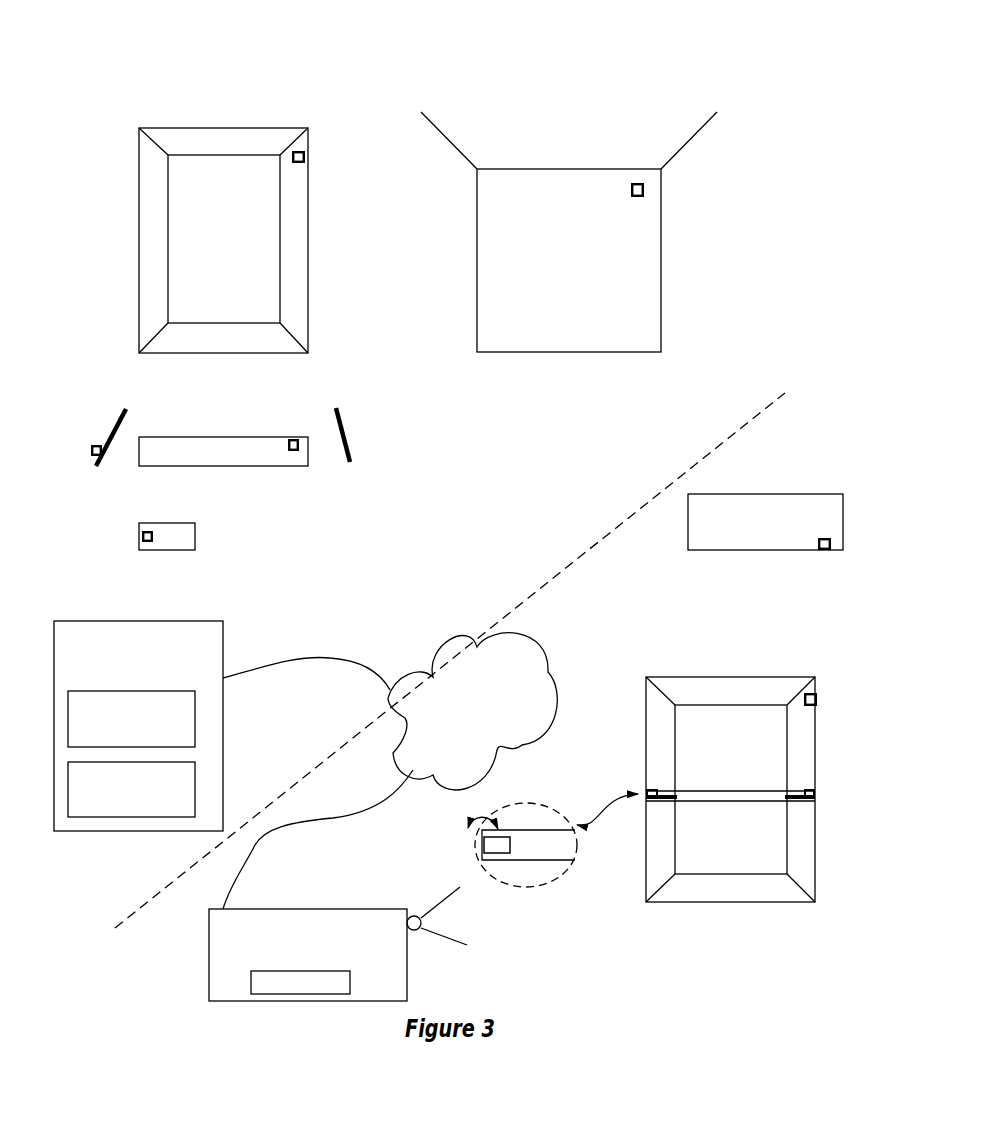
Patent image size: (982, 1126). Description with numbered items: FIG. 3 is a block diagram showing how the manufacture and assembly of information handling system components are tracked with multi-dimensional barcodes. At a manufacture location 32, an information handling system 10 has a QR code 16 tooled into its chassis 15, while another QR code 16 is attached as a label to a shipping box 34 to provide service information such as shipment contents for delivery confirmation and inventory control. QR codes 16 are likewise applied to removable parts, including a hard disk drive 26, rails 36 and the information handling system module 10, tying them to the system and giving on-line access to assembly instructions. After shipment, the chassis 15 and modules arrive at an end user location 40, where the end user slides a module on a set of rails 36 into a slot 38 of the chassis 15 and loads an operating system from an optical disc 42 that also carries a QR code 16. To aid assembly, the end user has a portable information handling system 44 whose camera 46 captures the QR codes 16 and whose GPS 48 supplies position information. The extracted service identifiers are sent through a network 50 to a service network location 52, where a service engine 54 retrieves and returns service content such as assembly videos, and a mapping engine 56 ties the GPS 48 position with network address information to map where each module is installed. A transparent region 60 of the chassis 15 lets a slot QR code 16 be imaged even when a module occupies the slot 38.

The information handling system 10 is at (308, 523).
The information handling system chassis 15 is at (138, 182).
The QR code 16 is at (631, 188).
The hard disk drive 26 is at (223, 568).
The manufacture location 32 is at (287, 74).
The shipping box 34 is at (569, 232).
The rails 36 is at (132, 408).
The slot 38 is at (563, 866).
The end user location 40 is at (735, 956).
The optical disc 42 is at (765, 522).
The portable information handling system 44 is at (308, 955).
The camera 46 is at (403, 916).
The GPS 48 is at (300, 982).
The network 50 is at (390, 771).
The service network location 52 is at (138, 726).
The service engine 54 is at (131, 719).
The mapping engine 56 is at (131, 789).
The transparent region 60 is at (455, 846).